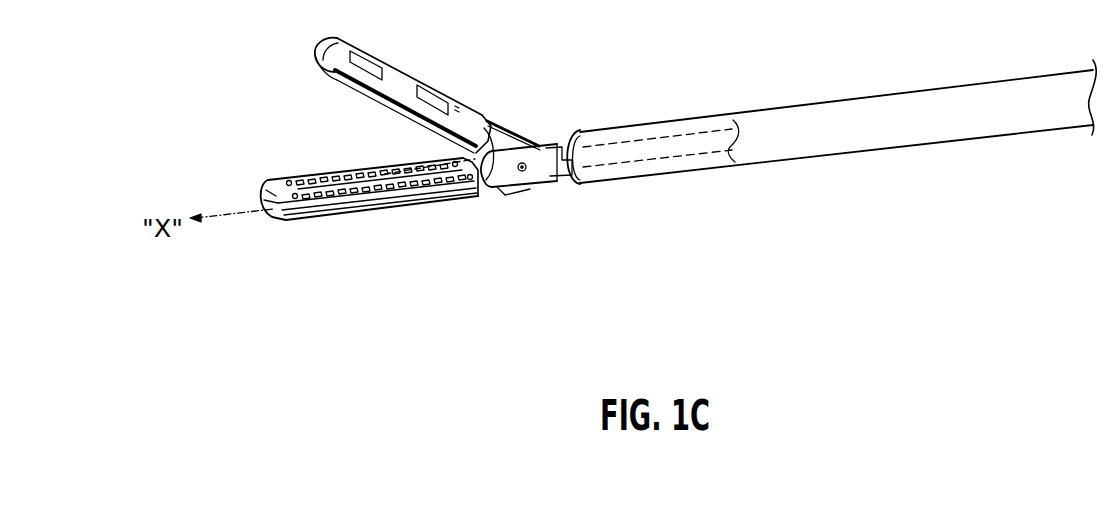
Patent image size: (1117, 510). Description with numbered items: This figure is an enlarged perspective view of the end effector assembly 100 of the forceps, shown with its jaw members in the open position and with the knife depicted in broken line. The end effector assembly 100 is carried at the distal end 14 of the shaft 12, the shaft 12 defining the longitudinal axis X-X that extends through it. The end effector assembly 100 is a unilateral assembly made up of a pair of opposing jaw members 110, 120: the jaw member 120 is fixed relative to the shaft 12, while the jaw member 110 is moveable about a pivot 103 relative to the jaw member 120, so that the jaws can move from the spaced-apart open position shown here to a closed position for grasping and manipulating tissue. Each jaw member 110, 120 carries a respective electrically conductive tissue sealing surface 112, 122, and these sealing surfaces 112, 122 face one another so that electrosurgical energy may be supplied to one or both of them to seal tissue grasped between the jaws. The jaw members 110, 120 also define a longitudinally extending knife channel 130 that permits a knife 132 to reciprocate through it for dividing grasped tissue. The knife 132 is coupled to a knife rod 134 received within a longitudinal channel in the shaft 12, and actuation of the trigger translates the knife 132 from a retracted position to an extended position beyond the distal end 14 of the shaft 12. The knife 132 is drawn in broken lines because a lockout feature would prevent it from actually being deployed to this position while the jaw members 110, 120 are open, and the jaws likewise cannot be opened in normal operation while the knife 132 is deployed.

The shaft 12 is at (880, 151).
The distal end 14 is at (623, 133).
The end effector assembly 100 is at (337, 243).
The pivot 103 is at (523, 171).
The jaw member 110 is at (390, 70).
The electrically conductive tissue sealing surface 112 is at (330, 82).
The jaw member 120 is at (292, 223).
The electrically conductive tissue sealing surface 122 is at (318, 176).
The knife channel 130 is at (356, 175).
The knife 132 is at (448, 182).
The knife rod 134 is at (660, 160).